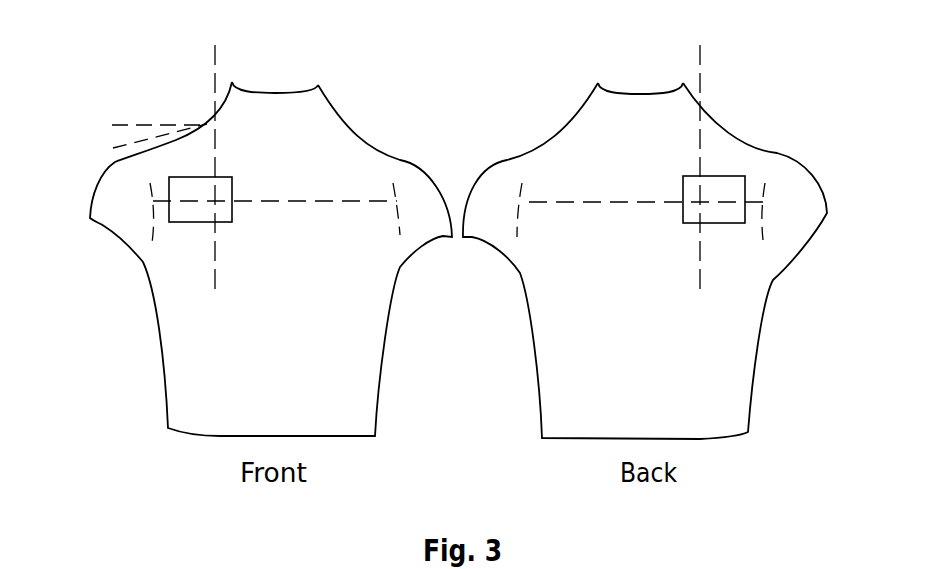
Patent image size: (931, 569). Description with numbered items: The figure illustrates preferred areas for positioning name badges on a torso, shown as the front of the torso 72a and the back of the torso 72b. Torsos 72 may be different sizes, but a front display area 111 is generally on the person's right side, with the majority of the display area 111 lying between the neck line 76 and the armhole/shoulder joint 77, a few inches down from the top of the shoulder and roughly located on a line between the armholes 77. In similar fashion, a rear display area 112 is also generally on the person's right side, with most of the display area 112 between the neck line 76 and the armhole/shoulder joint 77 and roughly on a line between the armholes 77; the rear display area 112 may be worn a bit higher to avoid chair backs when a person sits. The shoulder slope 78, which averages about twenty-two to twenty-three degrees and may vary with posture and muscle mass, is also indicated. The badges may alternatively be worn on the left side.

The torso 72 is at (458, 292).
The front of torso 72a is at (242, 403).
The back of torso 72b is at (678, 410).
The neck line 76 is at (213, 105).
The armhole/shoulder joint 77 is at (150, 210).
The shoulder slope 78 is at (172, 128).
The front display area 111 is at (193, 210).
The rear display area 112 is at (720, 210).